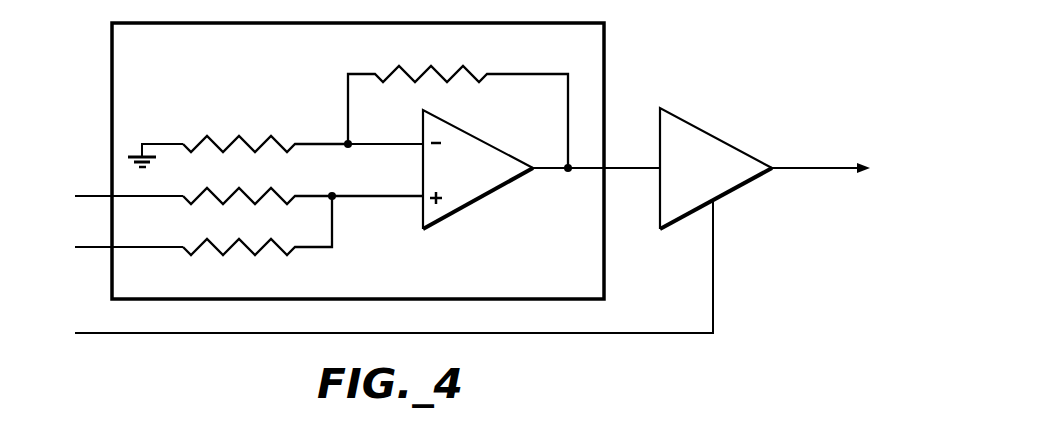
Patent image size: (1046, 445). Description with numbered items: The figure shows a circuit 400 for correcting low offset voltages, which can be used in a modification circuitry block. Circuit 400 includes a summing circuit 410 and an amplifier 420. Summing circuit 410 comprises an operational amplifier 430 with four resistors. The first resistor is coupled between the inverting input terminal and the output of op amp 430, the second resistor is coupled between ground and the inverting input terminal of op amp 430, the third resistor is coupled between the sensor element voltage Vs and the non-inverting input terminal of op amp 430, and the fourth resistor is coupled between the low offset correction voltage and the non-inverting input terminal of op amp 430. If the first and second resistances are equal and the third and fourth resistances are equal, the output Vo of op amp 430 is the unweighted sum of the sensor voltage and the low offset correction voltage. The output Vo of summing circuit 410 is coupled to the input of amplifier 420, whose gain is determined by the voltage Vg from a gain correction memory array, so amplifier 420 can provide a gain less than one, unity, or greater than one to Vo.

The circuit 400 is at (652, 52).
The summing circuit 410 is at (590, 259).
The amplifier 420 is at (720, 181).
The operational amplifier 430 is at (490, 180).